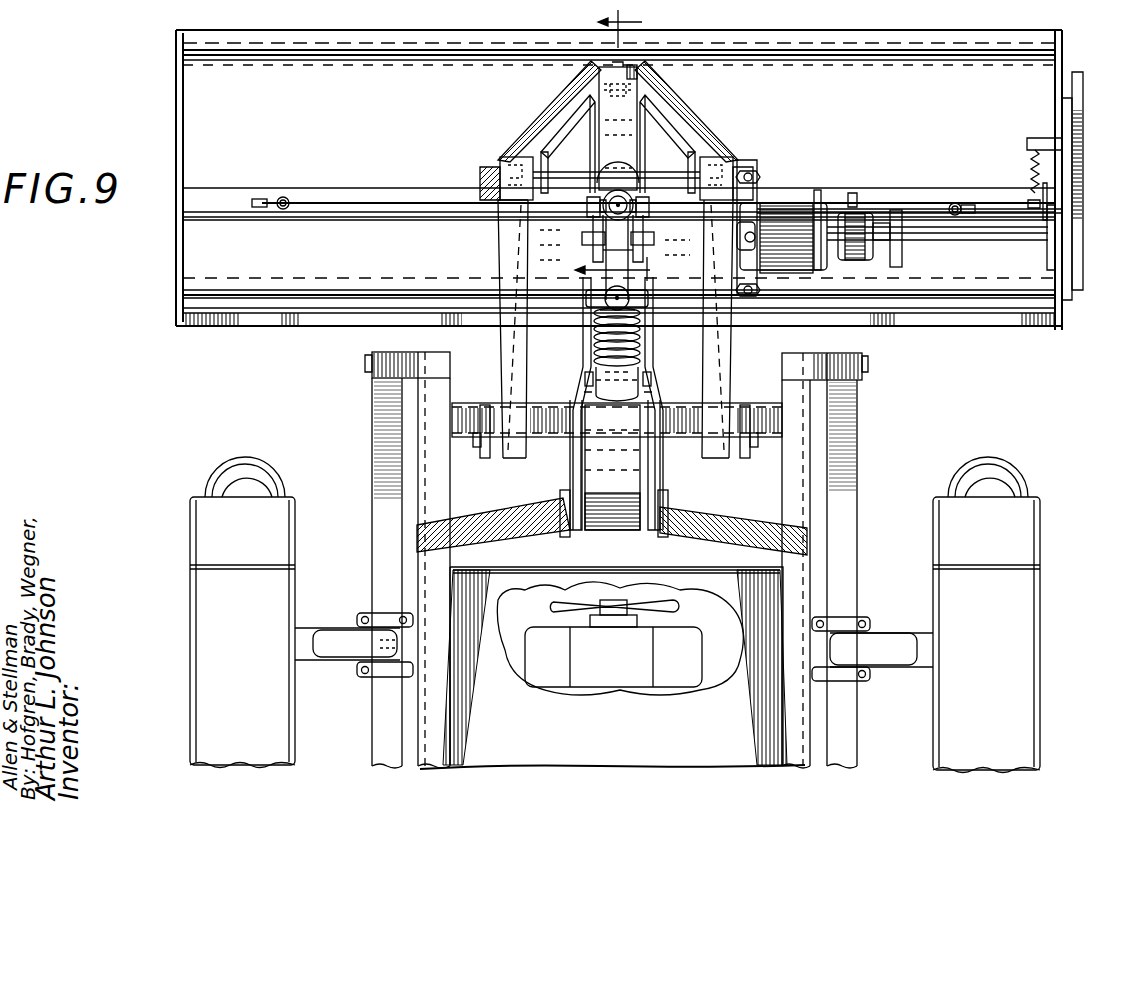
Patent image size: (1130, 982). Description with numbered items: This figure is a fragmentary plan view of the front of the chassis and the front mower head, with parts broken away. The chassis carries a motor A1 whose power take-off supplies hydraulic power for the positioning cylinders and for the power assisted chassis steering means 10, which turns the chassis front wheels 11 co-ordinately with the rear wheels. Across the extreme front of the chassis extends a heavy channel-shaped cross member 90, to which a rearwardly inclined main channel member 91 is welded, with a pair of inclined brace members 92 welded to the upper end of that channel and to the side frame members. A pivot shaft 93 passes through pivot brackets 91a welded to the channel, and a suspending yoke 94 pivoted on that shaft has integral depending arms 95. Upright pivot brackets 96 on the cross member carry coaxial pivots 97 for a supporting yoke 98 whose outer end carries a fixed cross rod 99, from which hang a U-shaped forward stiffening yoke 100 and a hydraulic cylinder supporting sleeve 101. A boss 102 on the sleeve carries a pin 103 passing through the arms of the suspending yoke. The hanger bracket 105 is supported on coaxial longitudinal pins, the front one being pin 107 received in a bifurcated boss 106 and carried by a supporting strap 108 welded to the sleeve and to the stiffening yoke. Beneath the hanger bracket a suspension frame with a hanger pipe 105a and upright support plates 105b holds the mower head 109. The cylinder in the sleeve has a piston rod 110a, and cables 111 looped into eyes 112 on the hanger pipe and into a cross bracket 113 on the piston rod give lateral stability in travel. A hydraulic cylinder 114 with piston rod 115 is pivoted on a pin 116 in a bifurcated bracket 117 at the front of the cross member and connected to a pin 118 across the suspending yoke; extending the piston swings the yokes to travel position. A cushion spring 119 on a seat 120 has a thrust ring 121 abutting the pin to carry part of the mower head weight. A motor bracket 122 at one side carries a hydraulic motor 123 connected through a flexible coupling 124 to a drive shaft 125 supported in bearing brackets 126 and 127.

The chassis steering means 10 is at (624, 145).
The chassis front wheels 11 is at (222, 480).
The cross member 90 is at (760, 405).
The main channel member 91 is at (616, 530).
The pivot brackets 91a is at (568, 520).
The inclined brace members 92 is at (500, 520).
The pivot shaft 93 is at (605, 500).
The suspending yoke 94 is at (660, 476).
The depending arms 95 is at (582, 240).
The upright pivot brackets 96 is at (482, 408).
The coaxial pivots 97 is at (476, 448).
The supporting yoke 98 is at (498, 275).
The cross rod 99 is at (700, 140).
The forward stiffening yoke 100 is at (560, 110).
The hydraulic cylinder supporting sleeve 101 is at (596, 180).
The boss 102 is at (645, 235).
The pin 103 is at (593, 258).
The hanger bracket 105 is at (650, 120).
The hanger pipe 105a is at (215, 187).
The upright support plates 105b is at (176, 262).
The bifurcated boss 106 is at (596, 74).
The longitudinal pin 107 is at (640, 66).
The supporting strap 108 is at (603, 90).
The mower head 109 is at (594, 203).
The piston rod 110a is at (642, 185).
The cables 111 is at (410, 182).
The eyes 112 is at (280, 210).
The cross bracket 113 is at (640, 200).
The hydraulic cylinder 114 is at (662, 372).
The piston rod 115 is at (630, 290).
The pin 116 is at (585, 378).
The bifurcated bracket 117 is at (584, 391).
The pin 118 is at (586, 294).
The cushion spring 119 is at (640, 350).
The seat 120 is at (596, 366).
The thrust ring 121 is at (633, 318).
The motor bracket 122 is at (826, 178).
The hydraulic motor 123 is at (785, 270).
The flexible coupling 124 is at (860, 262).
The drive shaft 125 is at (975, 245).
The bearing bracket 126 is at (902, 258).
The bearing bracket 127 is at (1047, 262).
The motor A1 is at (558, 668).